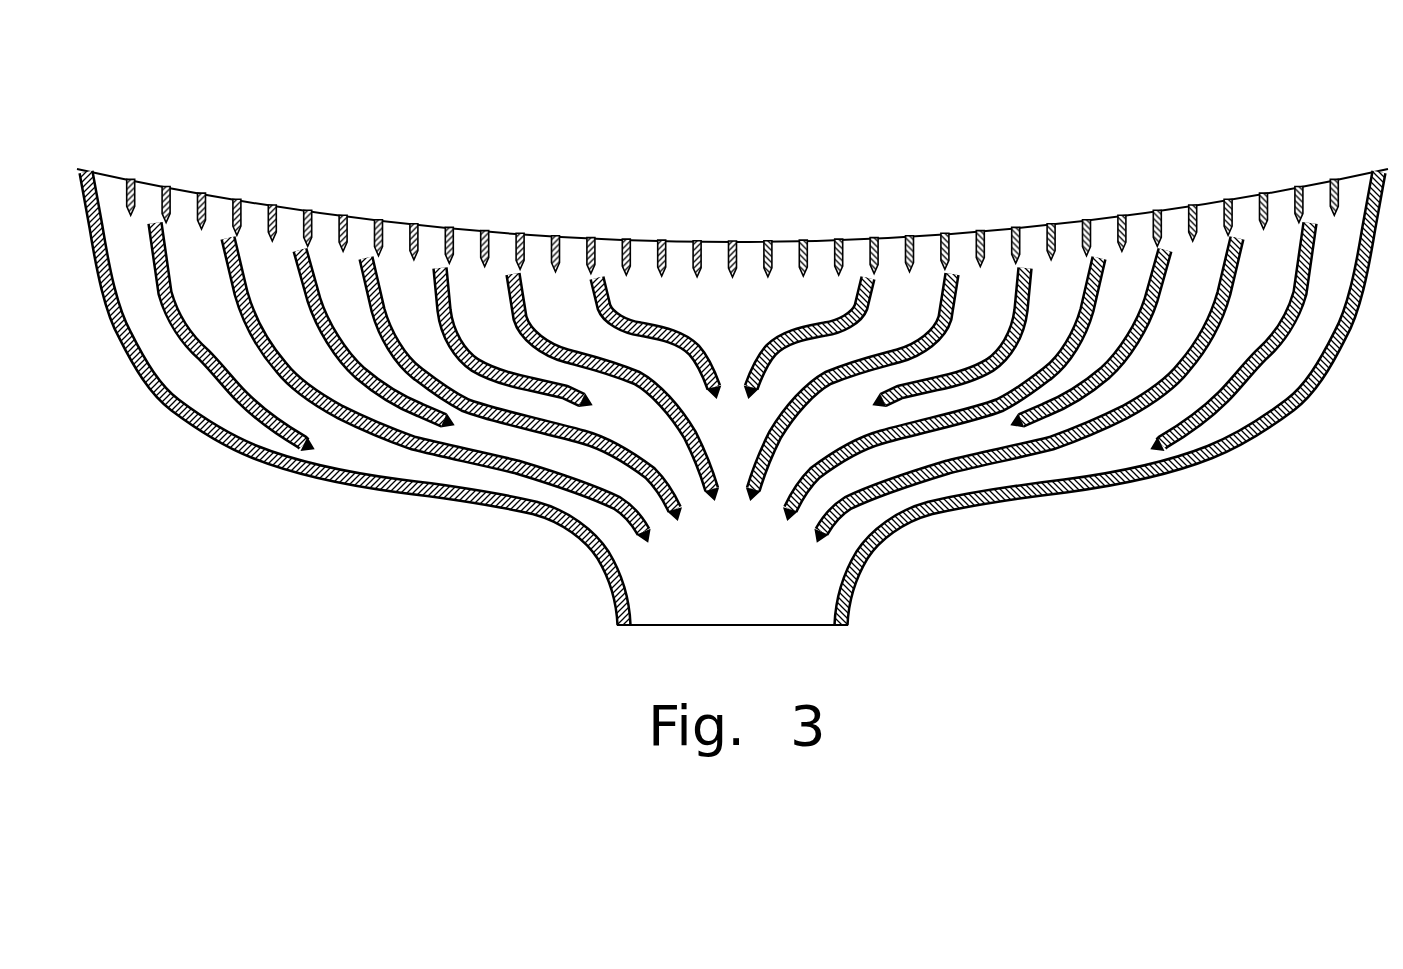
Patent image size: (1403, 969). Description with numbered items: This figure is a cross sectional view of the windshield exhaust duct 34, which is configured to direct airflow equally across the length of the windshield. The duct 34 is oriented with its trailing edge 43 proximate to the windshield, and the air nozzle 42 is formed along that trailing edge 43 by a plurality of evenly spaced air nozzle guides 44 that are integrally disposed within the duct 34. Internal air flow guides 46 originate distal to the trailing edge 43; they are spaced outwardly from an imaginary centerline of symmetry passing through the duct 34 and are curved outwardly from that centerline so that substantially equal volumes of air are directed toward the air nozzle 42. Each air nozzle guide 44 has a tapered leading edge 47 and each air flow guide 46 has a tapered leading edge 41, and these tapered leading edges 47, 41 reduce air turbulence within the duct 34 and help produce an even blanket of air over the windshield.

The windshield exhaust duct 34 is at (722, 319).
The tapered leading edge of air flow guide 41 is at (714, 478).
The air nozzle 42 is at (60, 168).
The trailing edge 43 is at (682, 240).
The air nozzle guides 44 is at (448, 238).
The internal air flow guides 46 is at (203, 377).
The tapered leading edge of air nozzle guide 47 is at (697, 272).